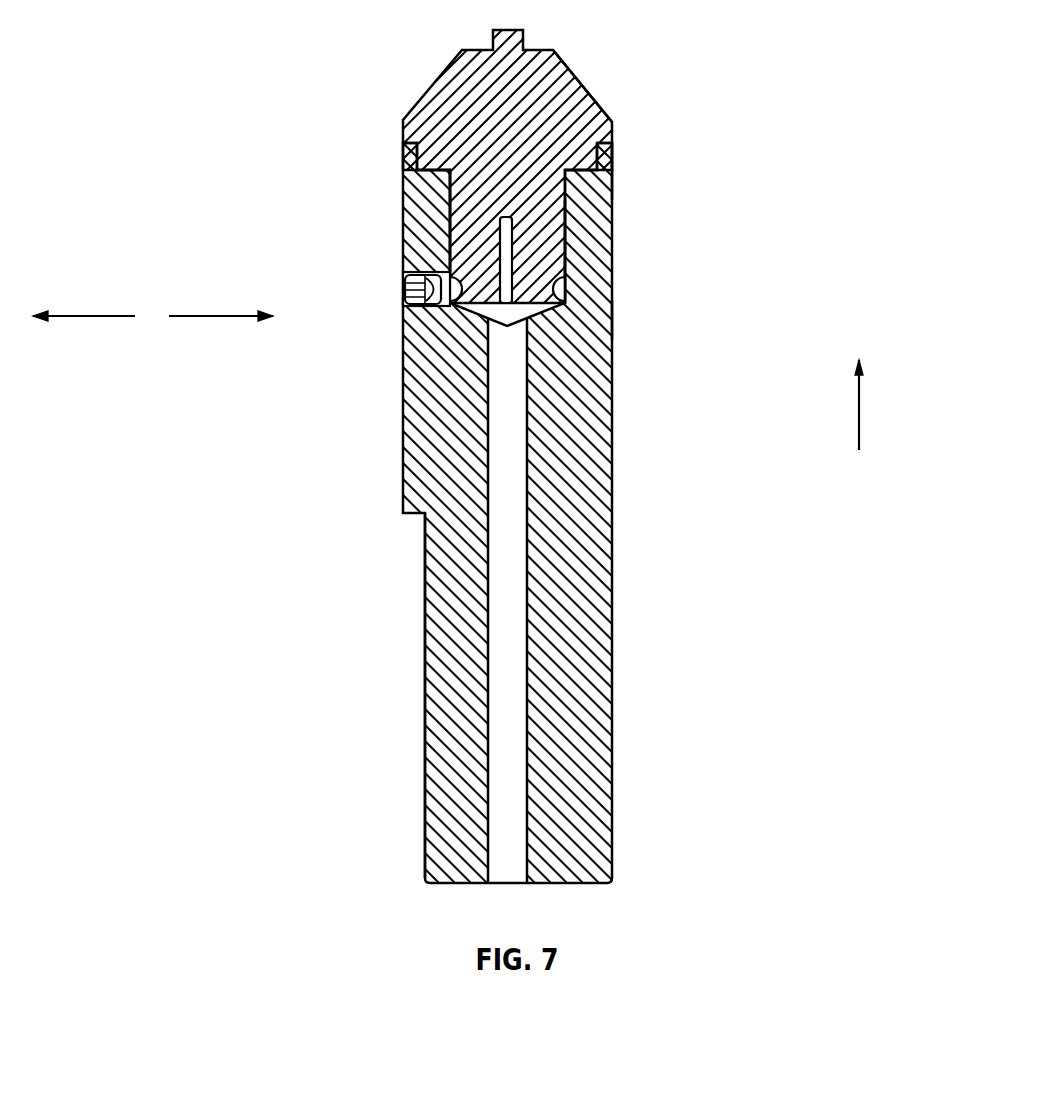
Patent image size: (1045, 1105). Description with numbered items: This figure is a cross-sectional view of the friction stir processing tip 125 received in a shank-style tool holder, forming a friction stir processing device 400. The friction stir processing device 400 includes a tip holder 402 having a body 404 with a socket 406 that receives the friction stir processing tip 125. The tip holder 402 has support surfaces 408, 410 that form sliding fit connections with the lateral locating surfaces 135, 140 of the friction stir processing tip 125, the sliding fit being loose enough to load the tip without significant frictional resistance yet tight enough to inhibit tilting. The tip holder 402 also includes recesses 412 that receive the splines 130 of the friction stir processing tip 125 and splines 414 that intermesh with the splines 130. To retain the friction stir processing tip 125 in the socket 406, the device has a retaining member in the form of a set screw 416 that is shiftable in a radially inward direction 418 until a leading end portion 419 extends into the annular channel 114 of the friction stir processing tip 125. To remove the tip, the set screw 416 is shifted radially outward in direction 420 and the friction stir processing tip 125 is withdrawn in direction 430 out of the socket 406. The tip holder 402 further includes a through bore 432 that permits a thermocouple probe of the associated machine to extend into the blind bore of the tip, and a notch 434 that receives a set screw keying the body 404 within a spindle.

The friction stir processing device 400 is at (522, 448).
The body 404 is at (560, 415).
The friction stir processing tip 125 is at (443, 105).
The lateral locating surface 140 is at (592, 155).
The socket 406 is at (612, 122).
The support surface 408 is at (410, 147).
The tip holder 402 is at (613, 177).
The splines 414 is at (440, 213).
The splines 130 is at (598, 176).
The support surface 410 is at (447, 262).
The recesses 412 is at (572, 237).
The lateral locating surface 135 is at (578, 265).
The annular channel 114 is at (596, 321).
The set screw 416 is at (427, 297).
The leading end portion 419 is at (450, 300).
The through bore 432 is at (515, 688).
The notch 434 is at (418, 682).
The radially inward direction 418 is at (217, 317).
The radially outward direction 420 is at (85, 317).
The removal direction 430 is at (859, 400).